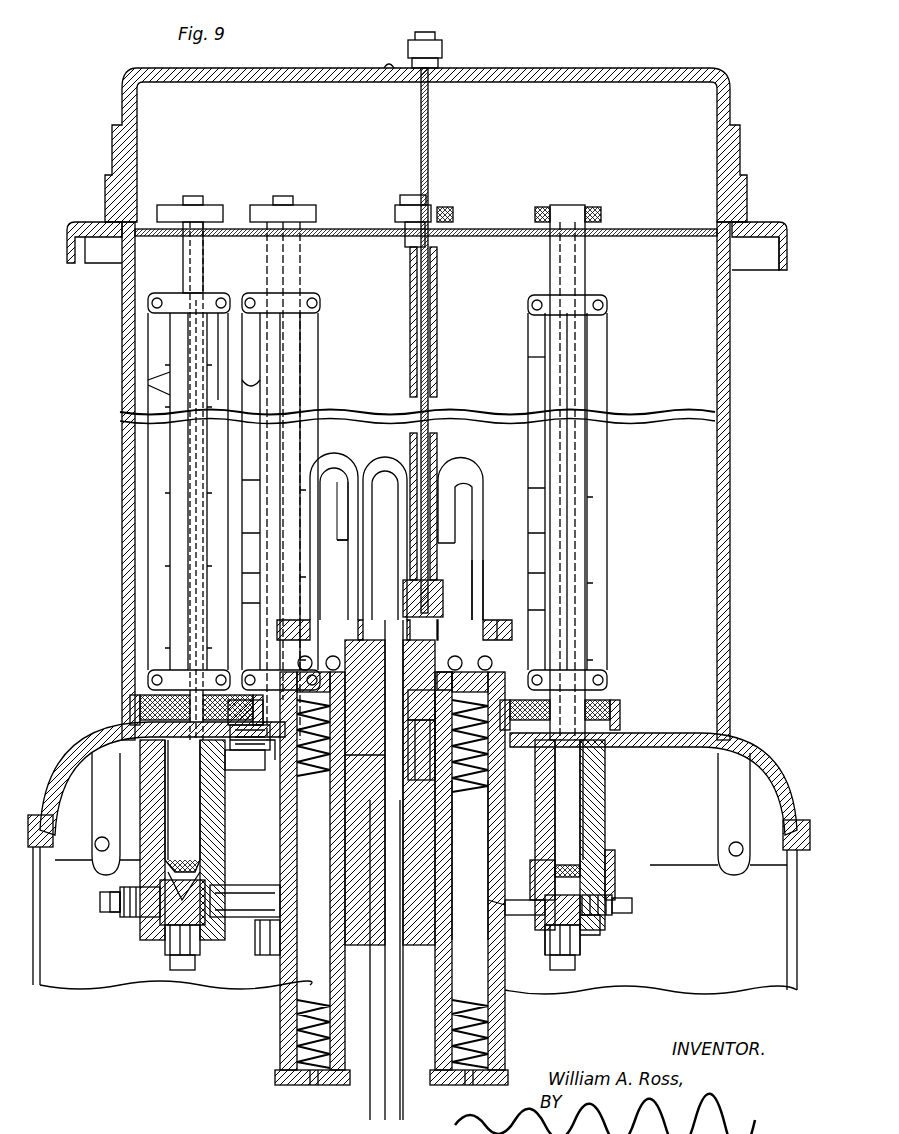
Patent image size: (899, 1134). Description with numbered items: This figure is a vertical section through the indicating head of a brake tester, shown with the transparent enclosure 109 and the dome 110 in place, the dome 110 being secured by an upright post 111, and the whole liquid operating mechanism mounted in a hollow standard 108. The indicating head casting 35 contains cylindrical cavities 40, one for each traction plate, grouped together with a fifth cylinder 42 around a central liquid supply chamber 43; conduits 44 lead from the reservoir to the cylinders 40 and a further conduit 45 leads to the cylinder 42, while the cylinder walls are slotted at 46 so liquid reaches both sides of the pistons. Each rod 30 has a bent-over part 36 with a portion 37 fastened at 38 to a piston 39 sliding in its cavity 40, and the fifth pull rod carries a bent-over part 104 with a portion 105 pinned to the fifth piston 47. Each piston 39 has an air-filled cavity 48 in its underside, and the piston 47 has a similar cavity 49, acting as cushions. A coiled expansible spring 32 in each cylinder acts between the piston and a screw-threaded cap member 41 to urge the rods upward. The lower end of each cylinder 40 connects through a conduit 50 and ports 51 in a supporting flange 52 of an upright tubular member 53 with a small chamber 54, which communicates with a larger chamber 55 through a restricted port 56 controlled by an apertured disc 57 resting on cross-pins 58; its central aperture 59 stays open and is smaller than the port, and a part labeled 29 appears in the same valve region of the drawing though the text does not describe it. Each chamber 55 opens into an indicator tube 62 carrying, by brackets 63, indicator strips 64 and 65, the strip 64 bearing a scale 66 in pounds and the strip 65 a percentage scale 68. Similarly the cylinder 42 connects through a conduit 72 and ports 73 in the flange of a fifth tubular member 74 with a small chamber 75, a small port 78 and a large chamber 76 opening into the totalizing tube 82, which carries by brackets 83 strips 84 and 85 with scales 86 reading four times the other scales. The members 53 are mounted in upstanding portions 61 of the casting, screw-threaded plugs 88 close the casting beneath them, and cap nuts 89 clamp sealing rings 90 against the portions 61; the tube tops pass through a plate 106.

The valve body 29 is at (602, 930).
The rod 30 is at (450, 510).
The coiled expansible spring 32 is at (300, 1025).
The indicating head casting 35 is at (370, 945).
The bent-over part 36 is at (460, 458).
The portion 37 is at (478, 569).
The pin 38 is at (455, 657).
The piston 39 is at (500, 625).
The cylindrical cavity 40 is at (490, 835).
The screw-threaded cap member 41 is at (282, 1056).
The fifth cylinder 42 is at (297, 808).
The liquid supply chamber 43 is at (420, 870).
The conduit 44 is at (428, 760).
The conduit 45 is at (335, 806).
The slot 46 is at (438, 685).
The fifth piston 47 is at (240, 712).
The cavity 48 is at (438, 712).
The cavity 49 is at (272, 750).
The conduit 50 is at (495, 905).
The ports 51 is at (540, 905).
The supporting flange 52 is at (545, 940).
The upright tubular member 53 is at (575, 804).
The small chamber 54 is at (582, 945).
The larger chamber 55 is at (570, 786).
The restricted port 56 is at (608, 862).
The apertured disc 57 is at (560, 865).
The cross-pins 58 is at (596, 925).
The apertures 59 is at (604, 880).
The upstanding portions 61 is at (140, 766).
The indicator tube 62 is at (280, 495).
The brackets 63 is at (305, 297).
The indicator strip 64 is at (318, 388).
The indicator strip 65 is at (252, 355).
The scale 66 is at (310, 360).
The scale 68 is at (254, 383).
The conduit 72 is at (257, 885).
The ports 73 is at (130, 912).
The fifth upright tubular member 74 is at (160, 808).
The small chamber 75 is at (155, 893).
The large chamber 76 is at (180, 787).
The small port 78 is at (170, 860).
The indicator tube 82 is at (183, 438).
The brackets 83 is at (170, 293).
The indicator strip 84 is at (150, 609).
The indicator strip 85 is at (222, 300).
The scale 86 is at (148, 385).
The screw-threaded plugs 88 is at (175, 975).
The cap nuts 89 is at (143, 697).
The sealing rings 90 is at (130, 712).
The bent-over part 104 is at (340, 470).
The portion 105 is at (330, 612).
The plate 106 is at (350, 229).
The hollow standard 108 is at (56, 965).
The transparent enclosure 109 is at (124, 331).
The dome 110 is at (122, 130).
The post 111 is at (430, 124).